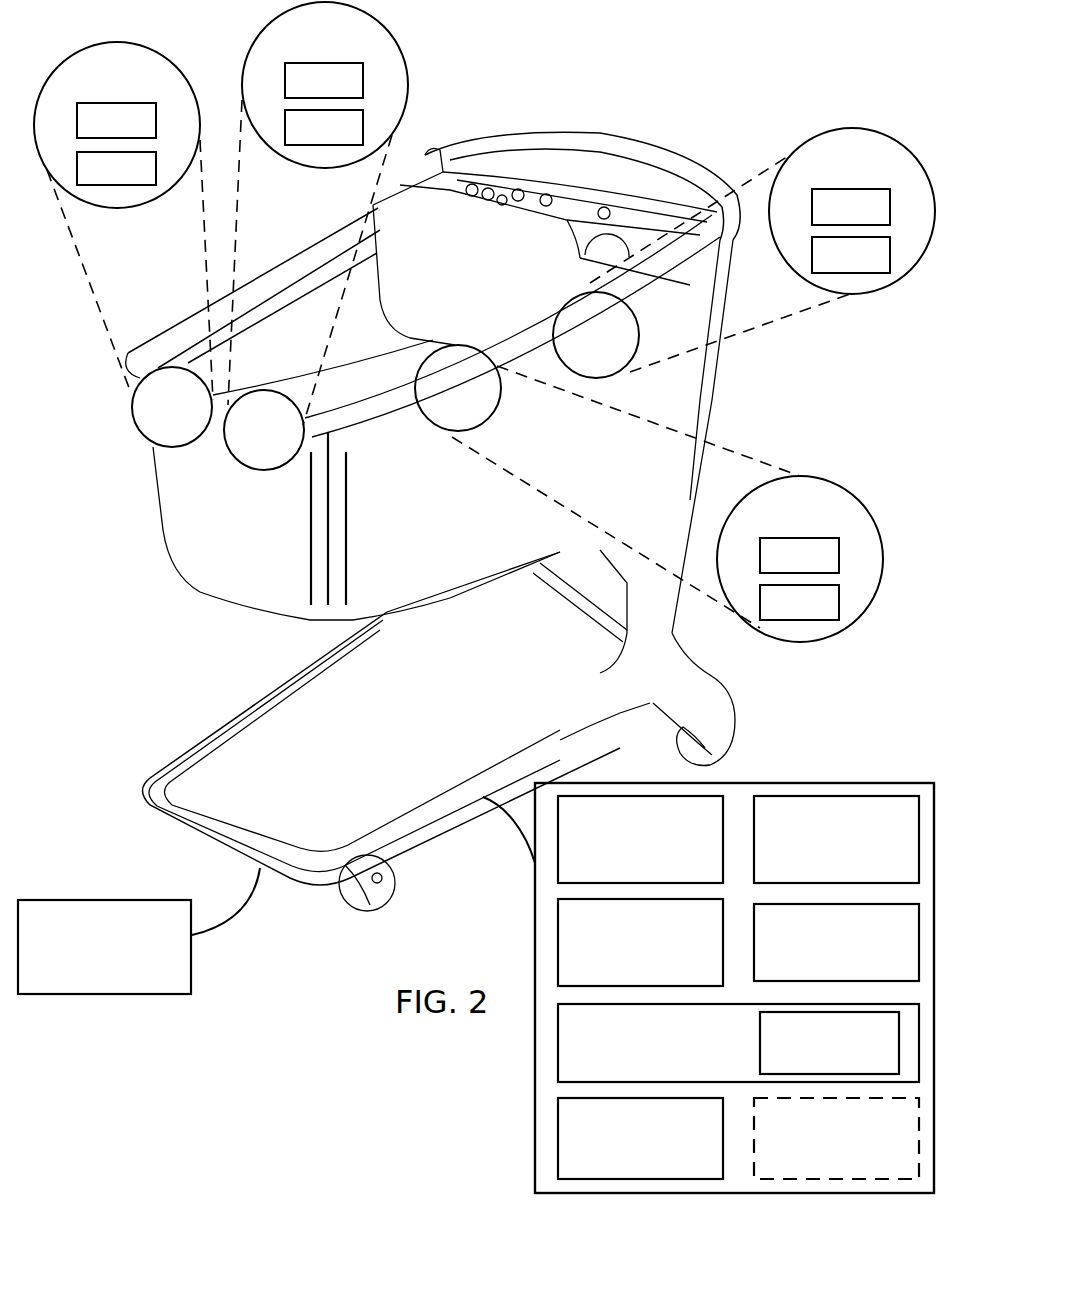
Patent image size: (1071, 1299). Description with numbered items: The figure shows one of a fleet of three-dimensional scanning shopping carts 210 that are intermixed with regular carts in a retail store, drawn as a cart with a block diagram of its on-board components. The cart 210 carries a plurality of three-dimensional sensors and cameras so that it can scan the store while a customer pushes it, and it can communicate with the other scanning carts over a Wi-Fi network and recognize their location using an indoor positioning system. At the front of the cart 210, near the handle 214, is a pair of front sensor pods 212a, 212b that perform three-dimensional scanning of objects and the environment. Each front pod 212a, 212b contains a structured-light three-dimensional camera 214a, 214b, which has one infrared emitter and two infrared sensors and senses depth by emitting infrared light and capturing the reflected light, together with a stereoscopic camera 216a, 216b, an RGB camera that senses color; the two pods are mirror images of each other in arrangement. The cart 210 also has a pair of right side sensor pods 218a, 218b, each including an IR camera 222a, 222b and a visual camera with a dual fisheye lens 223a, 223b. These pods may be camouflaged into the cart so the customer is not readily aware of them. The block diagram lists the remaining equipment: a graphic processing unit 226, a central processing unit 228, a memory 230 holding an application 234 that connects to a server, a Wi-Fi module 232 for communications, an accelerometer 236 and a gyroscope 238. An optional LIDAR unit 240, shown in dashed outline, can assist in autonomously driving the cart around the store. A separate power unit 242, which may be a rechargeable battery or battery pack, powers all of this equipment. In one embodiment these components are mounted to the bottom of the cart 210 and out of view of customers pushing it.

The 3D scanning shopping cart 210 is at (648, 132).
The right front sensor pod 212a is at (239, 441).
The left front sensor pod 212b is at (147, 418).
The handle 214 is at (224, 390).
The structured-light 3D camera 214a is at (299, 91).
The structured-light 3D camera 214b is at (91, 132).
The stereoscopic camera 216a is at (299, 139).
The stereoscopic camera 216b is at (91, 180).
The right side sensor pod 218a is at (433, 400).
The right side sensor pod 218b is at (571, 347).
The IR camera 222a is at (774, 566).
The IR camera 222b is at (826, 217).
The visual camera with dual fisheye lens 223a is at (774, 614).
The visual camera with dual fisheye lens 223b is at (826, 266).
The graphic processing unit 226 is at (681, 879).
The central processing unit 228 is at (681, 982).
The memory 230 is at (690, 1034).
The Wi-Fi module 232 is at (621, 1163).
The application 234 is at (810, 1068).
The accelerometer 236 is at (817, 865).
The gyroscope 238 is at (817, 968).
The LIDAR unit 240 is at (817, 1163).
The power unit 242 is at (85, 972).